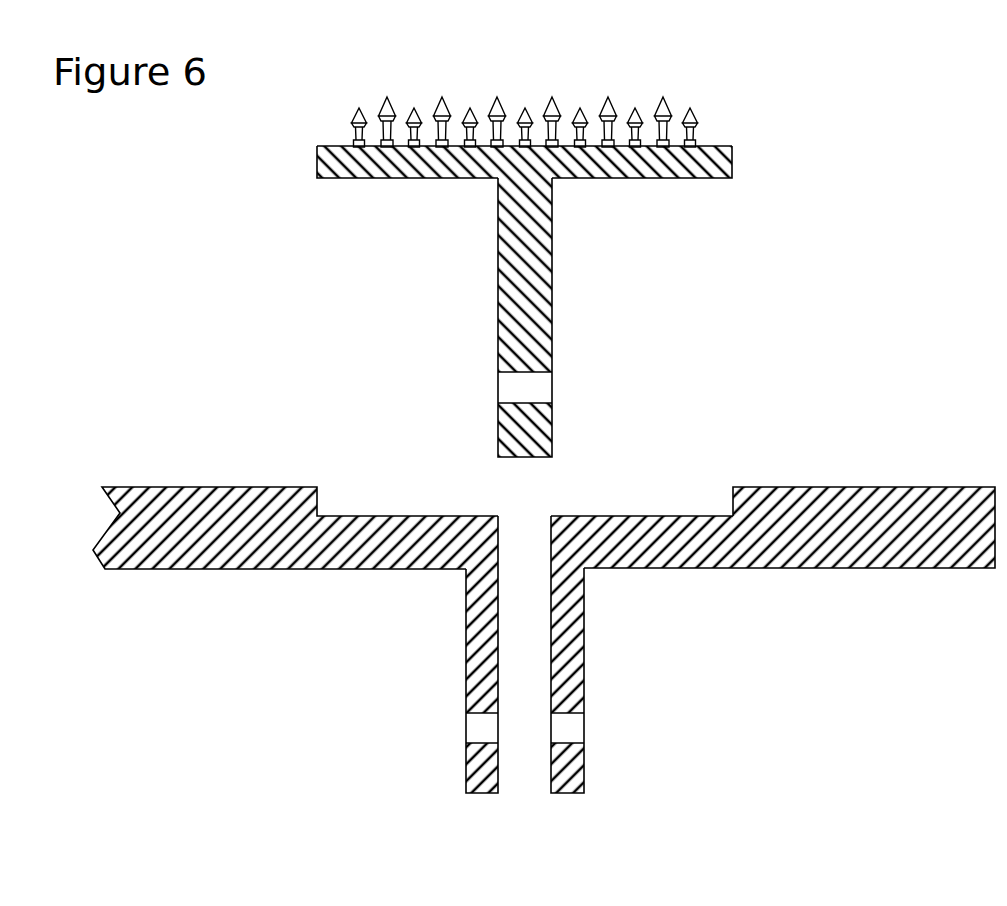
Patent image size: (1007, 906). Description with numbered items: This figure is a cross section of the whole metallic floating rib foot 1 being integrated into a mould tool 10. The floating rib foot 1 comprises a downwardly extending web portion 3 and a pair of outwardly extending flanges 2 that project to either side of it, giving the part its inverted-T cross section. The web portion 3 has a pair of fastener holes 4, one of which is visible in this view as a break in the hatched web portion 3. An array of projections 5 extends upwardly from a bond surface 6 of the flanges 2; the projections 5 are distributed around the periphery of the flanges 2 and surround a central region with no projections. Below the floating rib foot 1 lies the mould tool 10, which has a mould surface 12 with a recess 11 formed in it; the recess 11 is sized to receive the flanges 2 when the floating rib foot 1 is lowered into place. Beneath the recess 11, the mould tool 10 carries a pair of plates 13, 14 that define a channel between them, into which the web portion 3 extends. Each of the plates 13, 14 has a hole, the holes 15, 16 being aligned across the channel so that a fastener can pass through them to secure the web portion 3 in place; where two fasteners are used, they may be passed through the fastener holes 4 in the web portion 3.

The floating rib foot 1 is at (519, 233).
The flanges 2 is at (420, 178).
The web portion 3 is at (500, 276).
The fastener holes 4 is at (500, 382).
The projections 5 is at (658, 108).
The bond surface 6 is at (725, 142).
The mould tool 10 is at (200, 440).
The recess 11 is at (633, 516).
The mould surface 12 is at (842, 487).
The plate 13 is at (473, 657).
The plate 14 is at (583, 657).
The hole 15 is at (472, 723).
The hole 16 is at (580, 723).